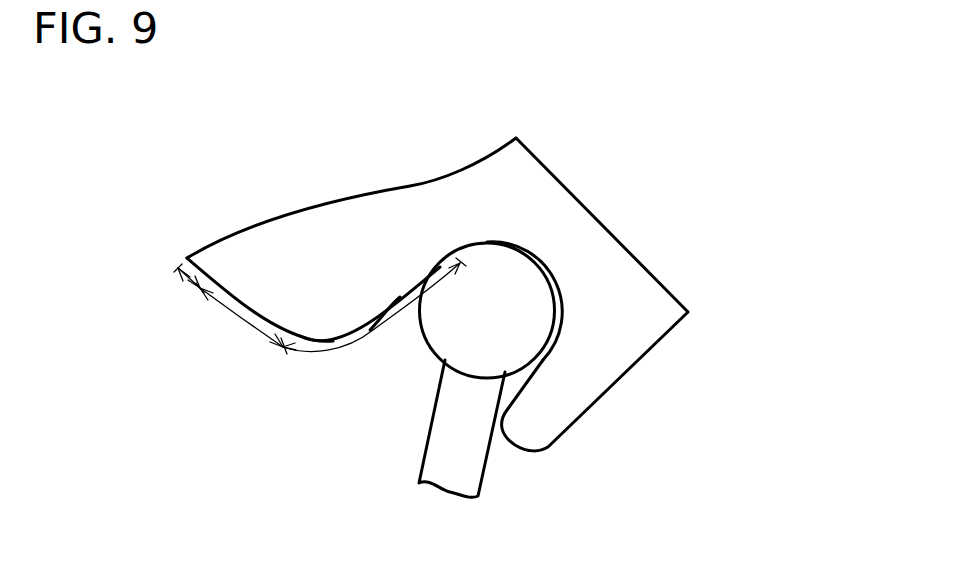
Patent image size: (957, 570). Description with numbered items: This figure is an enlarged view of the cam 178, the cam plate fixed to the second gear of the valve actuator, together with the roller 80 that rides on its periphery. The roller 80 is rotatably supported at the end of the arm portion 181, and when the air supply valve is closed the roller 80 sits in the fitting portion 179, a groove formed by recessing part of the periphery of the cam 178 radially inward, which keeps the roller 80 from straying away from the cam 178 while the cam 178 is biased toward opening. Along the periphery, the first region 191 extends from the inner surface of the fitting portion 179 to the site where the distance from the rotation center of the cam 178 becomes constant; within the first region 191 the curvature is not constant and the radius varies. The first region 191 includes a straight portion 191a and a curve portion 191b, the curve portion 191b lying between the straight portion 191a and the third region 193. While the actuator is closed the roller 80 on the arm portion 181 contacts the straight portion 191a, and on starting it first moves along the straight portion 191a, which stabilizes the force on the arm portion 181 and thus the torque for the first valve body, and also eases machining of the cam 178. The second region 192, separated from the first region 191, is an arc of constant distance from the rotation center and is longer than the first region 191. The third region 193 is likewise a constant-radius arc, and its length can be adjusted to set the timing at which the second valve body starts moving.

The roller 80 is at (523, 327).
The cam 178 is at (257, 250).
The fitting portion 179 is at (638, 260).
The arm portion 181 is at (442, 425).
The first region 191 is at (357, 343).
The straight portion 191a is at (390, 297).
The curve portion 191b is at (332, 333).
The second region 192 is at (177, 277).
The third region 193 is at (233, 317).